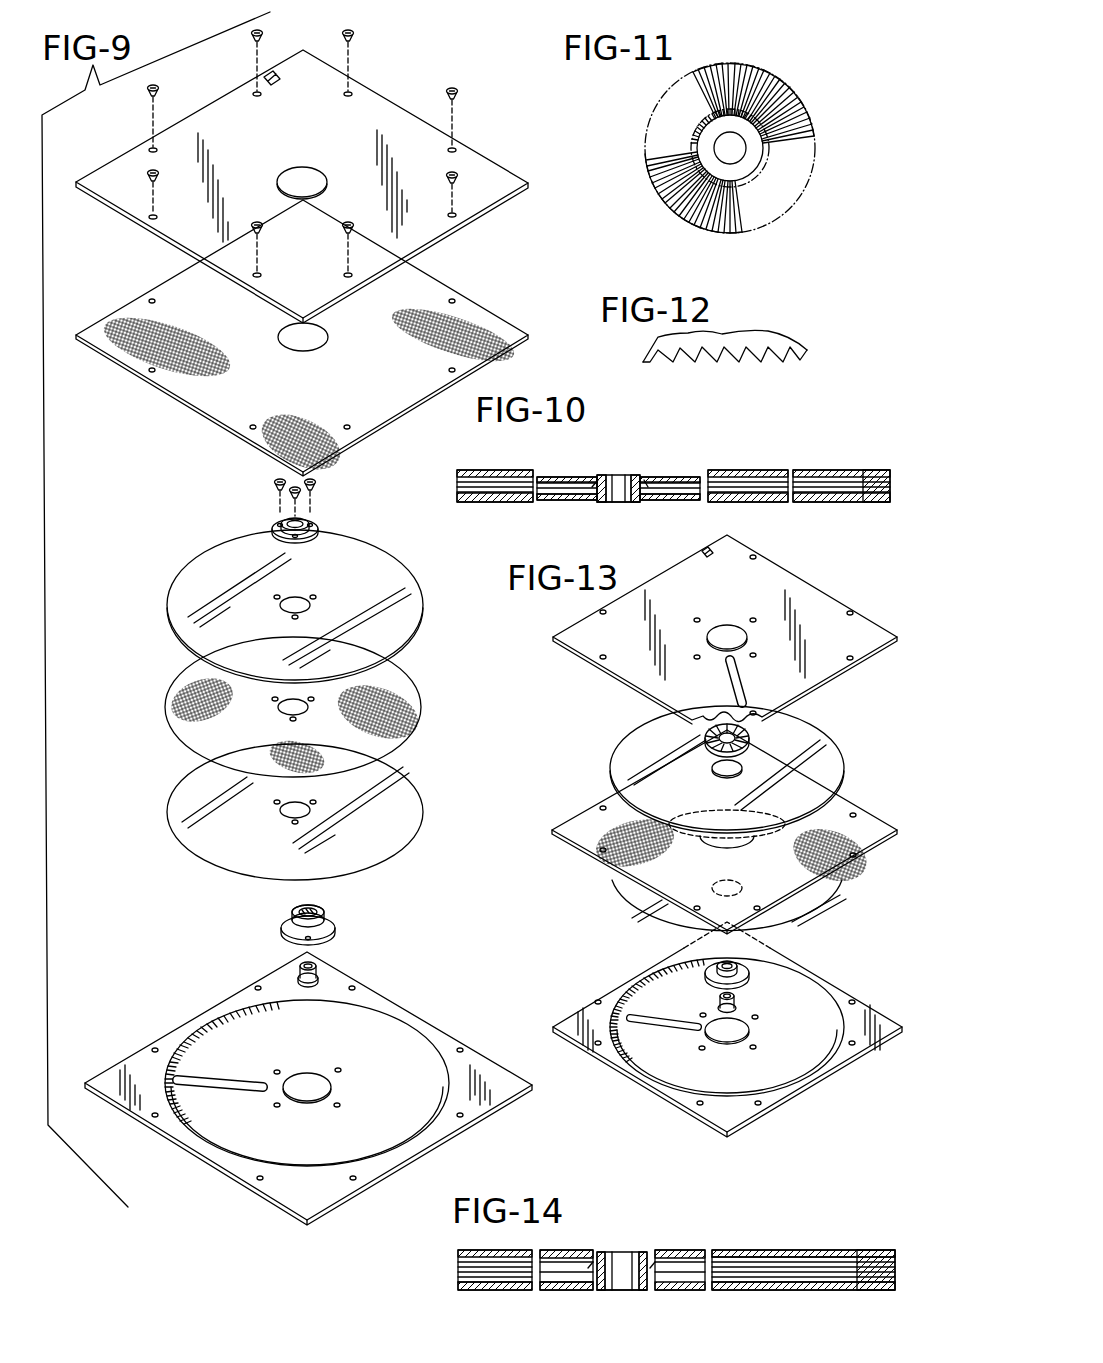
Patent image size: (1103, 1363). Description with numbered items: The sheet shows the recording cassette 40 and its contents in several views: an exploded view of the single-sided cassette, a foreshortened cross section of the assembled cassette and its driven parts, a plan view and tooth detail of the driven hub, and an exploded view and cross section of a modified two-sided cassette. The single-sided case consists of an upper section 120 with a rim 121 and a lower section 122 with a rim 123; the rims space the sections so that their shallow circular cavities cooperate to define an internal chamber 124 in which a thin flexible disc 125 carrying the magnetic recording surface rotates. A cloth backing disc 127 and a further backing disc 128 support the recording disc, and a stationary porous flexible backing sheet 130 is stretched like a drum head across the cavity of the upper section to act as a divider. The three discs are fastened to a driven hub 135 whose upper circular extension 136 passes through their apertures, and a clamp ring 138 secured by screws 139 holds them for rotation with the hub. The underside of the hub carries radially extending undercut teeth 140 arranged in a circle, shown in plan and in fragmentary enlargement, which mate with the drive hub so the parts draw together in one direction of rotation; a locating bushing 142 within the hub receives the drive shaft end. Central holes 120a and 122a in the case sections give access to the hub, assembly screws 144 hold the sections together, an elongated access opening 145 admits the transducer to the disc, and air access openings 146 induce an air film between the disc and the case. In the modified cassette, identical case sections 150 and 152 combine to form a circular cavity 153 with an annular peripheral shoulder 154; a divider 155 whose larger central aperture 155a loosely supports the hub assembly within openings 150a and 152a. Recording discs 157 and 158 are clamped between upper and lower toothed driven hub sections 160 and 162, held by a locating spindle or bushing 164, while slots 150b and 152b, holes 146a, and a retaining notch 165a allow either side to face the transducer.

In FIG. 9, the cassette 40 is at (266, 78).
In FIG. 9, the upper section 120 is at (370, 100).
In FIG. 10, the upper section 120 is at (480, 470).
In FIG. 9, the central hole 120a is at (300, 170).
In FIG. 9, the rim 121 is at (500, 215).
In FIG. 9, the lower section 122 is at (218, 1158).
In FIG. 10, the lower section 122 is at (478, 500).
In FIG. 9, the central opening 122a is at (325, 1082).
In FIG. 9, the rim 123 is at (435, 1030).
In FIG. 10, the internal chamber 124 is at (822, 462).
In FIG. 9, the disc 125 is at (182, 790).
In FIG. 10, the disc 125 is at (505, 495).
In FIG. 9, the backing disc 127 is at (178, 678).
In FIG. 9, the further backing disc 128 is at (190, 577).
In FIG. 10, the further backing disc 128 is at (513, 480).
In FIG. 9, the flexible backing sheet 130 is at (195, 385).
In FIG. 10, the flexible backing sheet 130 is at (870, 500).
In FIG. 9, the driven hub 135 is at (290, 935).
In FIG. 10, the driven hub 135 is at (590, 475).
In FIG. 11, the driven hub 135 is at (824, 140).
In FIG. 12, the driven hub 135 is at (752, 333).
In FIG. 9, the upper circular extension 136 is at (298, 912).
In FIG. 9, the clamp ring 138 is at (274, 528).
In FIG. 10, the clamp ring 138 is at (670, 478).
In FIG. 9, the screws 139 is at (253, 495).
In FIG. 10, the undercut teeth 140 is at (672, 500).
In FIG. 11, the undercut teeth 140 is at (748, 75).
In FIG. 12, the undercut teeth 140 is at (757, 364).
In FIG. 9, the locating bushing 142 is at (318, 970).
In FIG. 10, the locating bushing 142 is at (620, 475).
In FIG. 9, the assembly screws 144 is at (344, 30).
In FIG. 9, the access opening 145 is at (212, 1088).
In FIG. 9, the air access openings 146 is at (337, 1108).
In FIG. 13, the holes 146a is at (697, 622).
In FIG. 13, the case section 150 is at (785, 580).
In FIG. 14, the case section 150 is at (745, 1252).
In FIG. 13, the opening 150a is at (720, 625).
In FIG. 14, the opening 150a is at (538, 1252).
In FIG. 13, the access opening 150b is at (745, 678).
In FIG. 13, the case section 152 is at (608, 990).
In FIG. 14, the case section 152 is at (745, 1290).
In FIG. 13, the opening 152a is at (750, 1032).
In FIG. 14, the opening 152a is at (535, 1280).
In FIG. 13, the access opening 152b is at (638, 1025).
In FIG. 14, the circular cavity 153 is at (835, 1262).
In FIG. 13, the annular peripheral shoulder 154 is at (795, 1073).
In FIG. 14, the annular peripheral shoulder 154 is at (860, 1290).
In FIG. 13, the divider 155 is at (565, 832).
In FIG. 14, the divider 155 is at (478, 1282).
In FIG. 13, the central aperture 155a is at (712, 845).
In FIG. 13, the recording disc 157 is at (630, 908).
In FIG. 14, the recording disc 157 is at (458, 1272).
In FIG. 13, the recording disc 158 is at (825, 752).
In FIG. 14, the recording disc 158 is at (458, 1262).
In FIG. 13, the upper toothed driven hub section 160 is at (705, 740).
In FIG. 14, the upper toothed driven hub section 160 is at (683, 1258).
In FIG. 13, the lower toothed driven hub section 162 is at (760, 970).
In FIG. 14, the lower toothed driven hub section 162 is at (660, 1280).
In FIG. 13, the locating spindle or bushing 164 is at (740, 1000).
In FIG. 14, the locating spindle or bushing 164 is at (640, 1255).
In FIG. 13, the retaining notch 165a is at (710, 550).